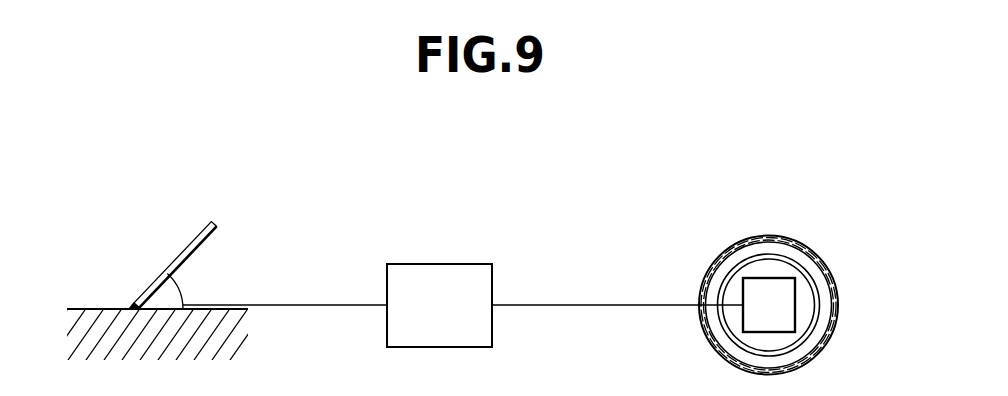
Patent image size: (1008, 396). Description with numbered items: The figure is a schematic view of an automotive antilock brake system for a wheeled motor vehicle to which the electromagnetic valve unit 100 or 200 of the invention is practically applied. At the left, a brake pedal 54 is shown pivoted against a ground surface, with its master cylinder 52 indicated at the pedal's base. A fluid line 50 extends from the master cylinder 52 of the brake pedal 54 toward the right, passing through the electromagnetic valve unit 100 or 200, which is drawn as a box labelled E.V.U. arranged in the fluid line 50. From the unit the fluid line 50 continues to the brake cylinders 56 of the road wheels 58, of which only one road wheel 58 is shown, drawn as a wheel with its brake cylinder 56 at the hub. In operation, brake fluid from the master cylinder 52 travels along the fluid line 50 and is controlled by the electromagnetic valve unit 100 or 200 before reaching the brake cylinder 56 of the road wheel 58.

The fluid line 50 is at (562, 305).
The master cylinder 52 is at (188, 273).
The brake pedal 54 is at (184, 248).
The brake cylinder 56 is at (778, 279).
The road wheel 58 is at (764, 236).
The electromagnetic valve unit 100 is at (491, 261).
The electromagnetic valve unit 200 is at (466, 254).